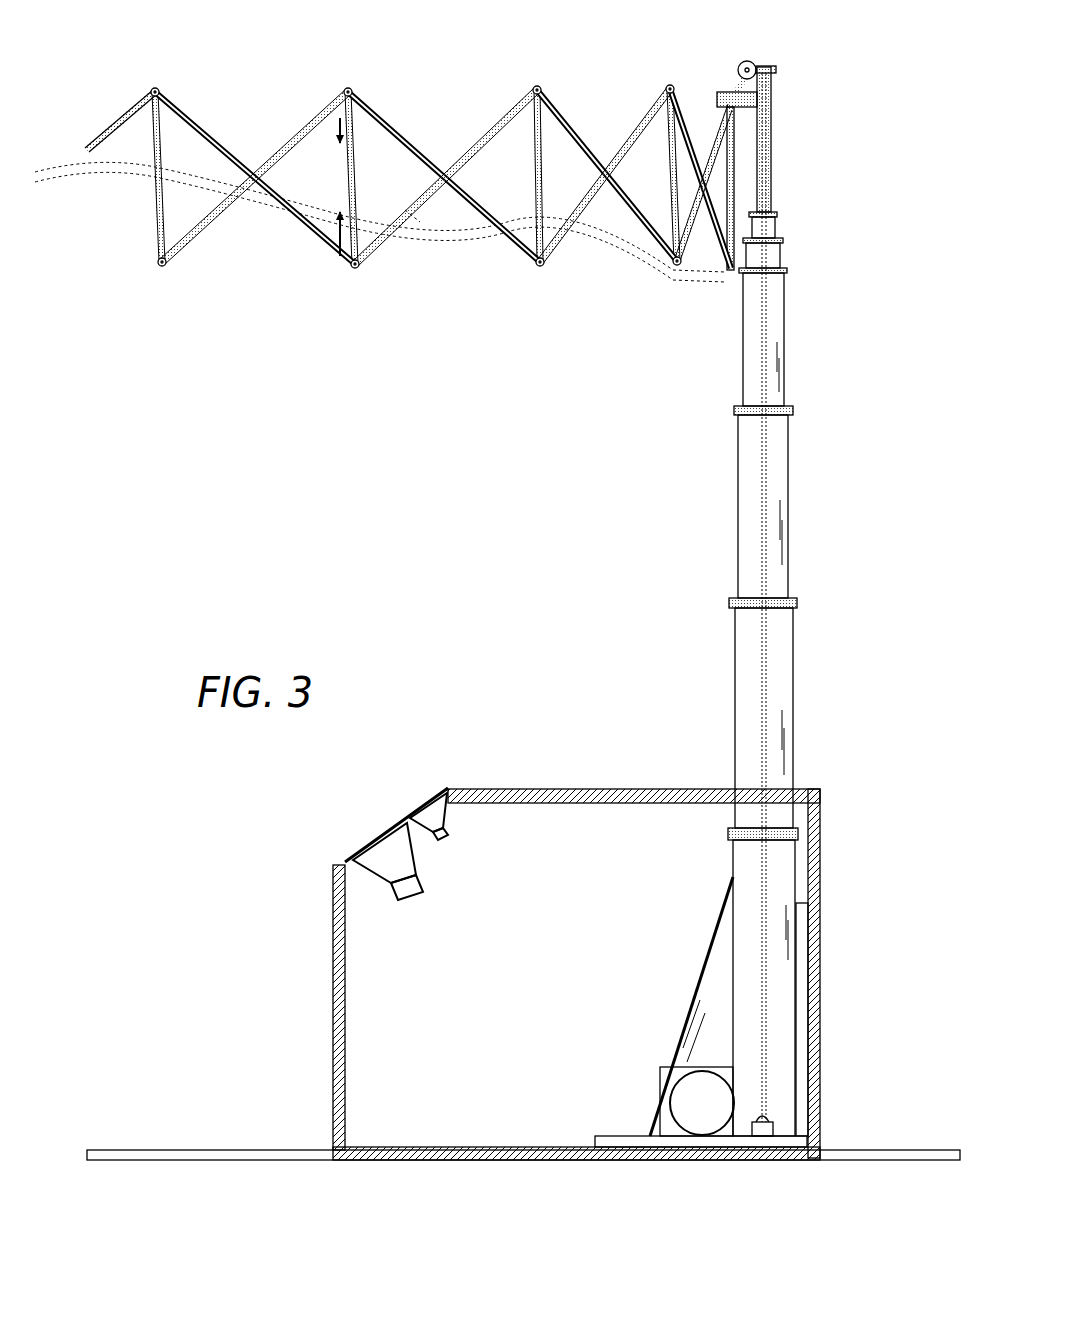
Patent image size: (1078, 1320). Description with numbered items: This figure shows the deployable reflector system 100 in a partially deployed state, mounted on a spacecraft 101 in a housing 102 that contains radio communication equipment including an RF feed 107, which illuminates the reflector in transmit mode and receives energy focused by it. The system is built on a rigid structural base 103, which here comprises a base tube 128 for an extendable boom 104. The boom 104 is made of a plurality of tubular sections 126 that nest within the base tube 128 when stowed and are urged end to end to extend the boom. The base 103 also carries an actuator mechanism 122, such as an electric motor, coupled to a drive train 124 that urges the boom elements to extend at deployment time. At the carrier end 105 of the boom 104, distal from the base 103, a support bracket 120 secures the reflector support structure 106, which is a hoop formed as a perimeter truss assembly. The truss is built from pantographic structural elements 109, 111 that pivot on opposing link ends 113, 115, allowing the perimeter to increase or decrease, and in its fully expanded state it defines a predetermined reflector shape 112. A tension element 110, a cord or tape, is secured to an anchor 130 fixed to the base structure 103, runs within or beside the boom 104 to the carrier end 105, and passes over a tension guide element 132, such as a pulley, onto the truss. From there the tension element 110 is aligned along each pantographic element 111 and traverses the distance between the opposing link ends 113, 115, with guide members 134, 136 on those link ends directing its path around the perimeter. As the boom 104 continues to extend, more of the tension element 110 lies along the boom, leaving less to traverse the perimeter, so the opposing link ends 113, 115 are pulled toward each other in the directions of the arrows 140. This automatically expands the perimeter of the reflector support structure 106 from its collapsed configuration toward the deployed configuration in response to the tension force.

The deployable reflector system 100 is at (866, 117).
The spacecraft 101 is at (290, 957).
The housing 102 is at (331, 1025).
The rigid structural base 103 is at (683, 925).
The extendable boom 104 is at (800, 530).
The carrier end 105 is at (776, 92).
The reflector support structure 106 is at (78, 283).
The RF feed 107 is at (372, 800).
The pantographic structural element 109 is at (210, 118).
The tension element 110 is at (110, 133).
The pantographic structural element 111 is at (225, 185).
The reflector shape 112 is at (410, 215).
The link end 113 is at (340, 90).
The link end 115 is at (340, 264).
The support bracket 120 is at (727, 100).
The actuator mechanism 122 is at (712, 1115).
The drive train 124 is at (655, 1080).
The tubular sections 126 is at (786, 252).
The base tube 128 is at (778, 1040).
The anchor 130 is at (775, 1126).
The tension guide element 132 is at (753, 62).
The guide member 134 is at (156, 90).
The guide member 136 is at (162, 266).
The arrows 140 is at (335, 130).